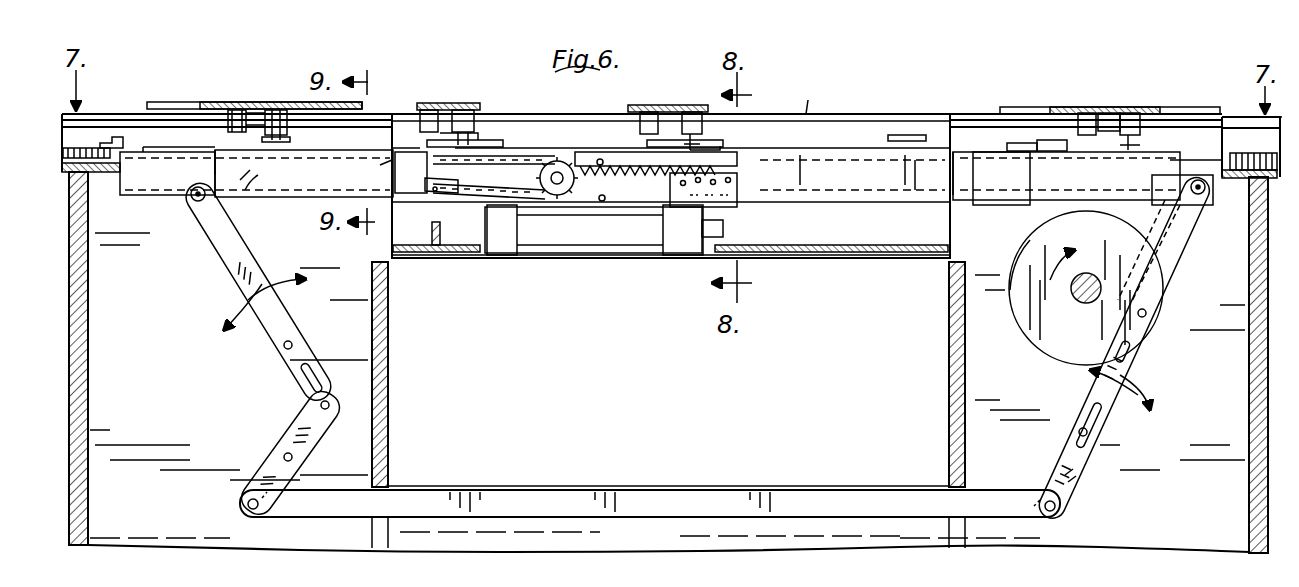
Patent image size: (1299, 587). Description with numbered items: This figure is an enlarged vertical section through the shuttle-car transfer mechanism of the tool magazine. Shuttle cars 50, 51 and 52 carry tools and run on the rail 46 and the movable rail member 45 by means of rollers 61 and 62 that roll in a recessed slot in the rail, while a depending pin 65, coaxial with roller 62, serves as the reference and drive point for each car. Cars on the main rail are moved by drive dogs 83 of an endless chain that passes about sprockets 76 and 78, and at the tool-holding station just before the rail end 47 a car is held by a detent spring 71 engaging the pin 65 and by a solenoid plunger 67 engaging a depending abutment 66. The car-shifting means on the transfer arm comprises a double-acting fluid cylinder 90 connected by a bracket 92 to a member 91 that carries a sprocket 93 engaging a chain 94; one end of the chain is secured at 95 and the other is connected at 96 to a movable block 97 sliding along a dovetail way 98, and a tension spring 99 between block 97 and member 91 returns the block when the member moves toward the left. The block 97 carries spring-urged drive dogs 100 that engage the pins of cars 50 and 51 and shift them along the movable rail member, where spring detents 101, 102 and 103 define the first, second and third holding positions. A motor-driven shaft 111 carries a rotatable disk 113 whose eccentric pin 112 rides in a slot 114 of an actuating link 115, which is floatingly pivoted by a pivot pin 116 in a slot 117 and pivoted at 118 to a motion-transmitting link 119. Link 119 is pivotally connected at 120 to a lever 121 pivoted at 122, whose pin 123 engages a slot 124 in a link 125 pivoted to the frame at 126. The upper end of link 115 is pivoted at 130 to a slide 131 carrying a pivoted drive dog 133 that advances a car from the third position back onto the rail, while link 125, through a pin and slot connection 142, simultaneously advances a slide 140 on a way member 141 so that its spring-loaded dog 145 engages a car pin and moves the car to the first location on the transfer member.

The movable rail member 45 is at (806, 114).
The rail 46 is at (985, 114).
The rail end 47 is at (392, 114).
The shuttle car 50 is at (426, 103).
The shuttle car 51 is at (675, 105).
The shuttle car 52 is at (155, 102).
The roller 61 is at (236, 110).
The roller 62 is at (276, 110).
The pin 65 is at (1125, 147).
The depending abutment 66 is at (252, 112).
The plunger 67 is at (254, 175).
The detent spring 71 is at (292, 138).
The sprocket 76 is at (1250, 178).
The sprocket 78 is at (90, 172).
The drive dog 83 is at (118, 137).
The double-acting fluid cylinder 90 is at (640, 240).
The member 91 is at (620, 205).
The bracket 92 is at (725, 214).
The sprocket 93 is at (568, 158).
The chain 94 is at (488, 192).
The chain anchoring point 95 is at (433, 193).
The chain connection 96 is at (392, 165).
The movable block 97 is at (737, 168).
The dovetail way 98 is at (862, 175).
The tension spring 99 is at (612, 150).
The spring-urged drive dogs 100 is at (505, 141).
The spring detent 101 is at (478, 135).
The spring detent 102 is at (722, 150).
The spring detent 103 is at (905, 135).
The shaft 111 is at (1082, 300).
The eccentric pin 112 is at (1148, 316).
The rotatable disk 113 is at (1010, 265).
The slot 114 is at (1165, 250).
The actuating link 115 is at (1070, 482).
The pivot pin 116 is at (1085, 440).
The slot 117 is at (1092, 436).
The pivot 118 is at (1058, 515).
The motion-transmitting link 119 is at (615, 502).
The pivotal connection 120 is at (246, 505).
The lever 121 is at (300, 432).
The pivot 122 is at (283, 456).
The pin 123 is at (325, 405).
The slot 124 is at (325, 375).
The link 125 is at (232, 272).
The frame pivot 126 is at (283, 350).
The pivotal connection 130 is at (1086, 288).
The slide 131 is at (1178, 160).
The pivoted drive dog 133 is at (1040, 148).
The slide 140 is at (160, 210).
The way member 141 is at (290, 202).
The pin and slot connection 142 is at (230, 277).
The spring-loaded dog 145 is at (217, 150).